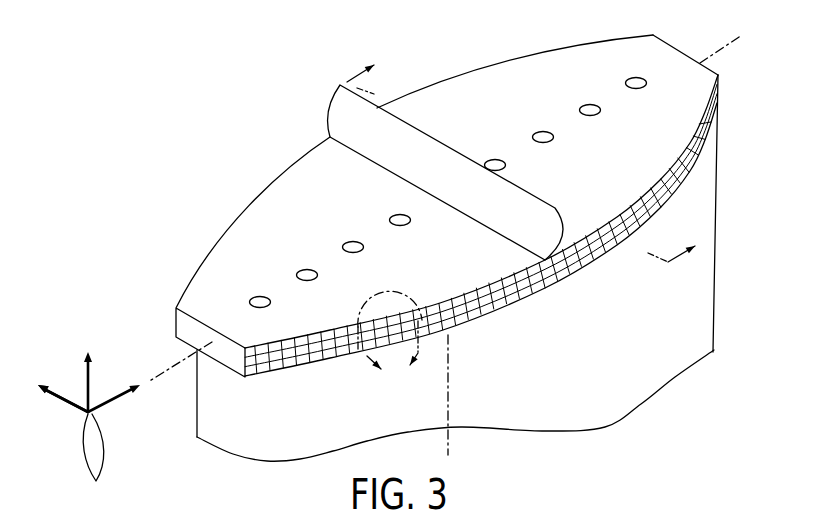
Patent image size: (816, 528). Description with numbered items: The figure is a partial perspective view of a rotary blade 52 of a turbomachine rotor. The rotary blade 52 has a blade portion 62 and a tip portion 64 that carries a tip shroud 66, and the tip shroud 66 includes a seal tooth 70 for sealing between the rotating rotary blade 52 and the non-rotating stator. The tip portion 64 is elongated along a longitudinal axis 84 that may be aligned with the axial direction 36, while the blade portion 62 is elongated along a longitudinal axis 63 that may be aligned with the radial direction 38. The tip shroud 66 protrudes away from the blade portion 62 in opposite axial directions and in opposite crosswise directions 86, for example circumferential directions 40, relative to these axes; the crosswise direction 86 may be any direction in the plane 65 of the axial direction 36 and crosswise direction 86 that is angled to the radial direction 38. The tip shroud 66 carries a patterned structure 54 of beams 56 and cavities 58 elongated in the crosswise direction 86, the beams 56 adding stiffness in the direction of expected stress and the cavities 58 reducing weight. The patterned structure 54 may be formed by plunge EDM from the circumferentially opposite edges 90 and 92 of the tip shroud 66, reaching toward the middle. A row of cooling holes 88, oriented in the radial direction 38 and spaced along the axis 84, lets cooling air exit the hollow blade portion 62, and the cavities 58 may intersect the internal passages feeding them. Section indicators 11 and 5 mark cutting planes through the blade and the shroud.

The rotary blade 52 is at (187, 107).
The tip portion 64 is at (228, 196).
The tip shroud 66 is at (466, 73).
The edge of the tip shroud 90 is at (523, 58).
The seal tooth 70 is at (336, 100).
The cooling holes 88 is at (590, 104).
The patterned structure 54 is at (609, 252).
The edge of the tip shroud 92 is at (582, 264).
The blade portion 62 is at (716, 262).
The section line 11- 11 is at (512, 171).
The longitudinal axis of the blade portion 63 is at (450, 379).
The section view 5 detail 5 is at (394, 342).
The beams 56 is at (316, 364).
The cavities 58 is at (336, 349).
The longitudinal axis of the tip portion 84 is at (152, 377).
The radial direction 38 is at (93, 388).
The axial direction 36 is at (114, 407).
The circumferential direction 40 is at (73, 408).
The crosswise direction 86 is at (63, 398).
The plane 65 is at (95, 462).